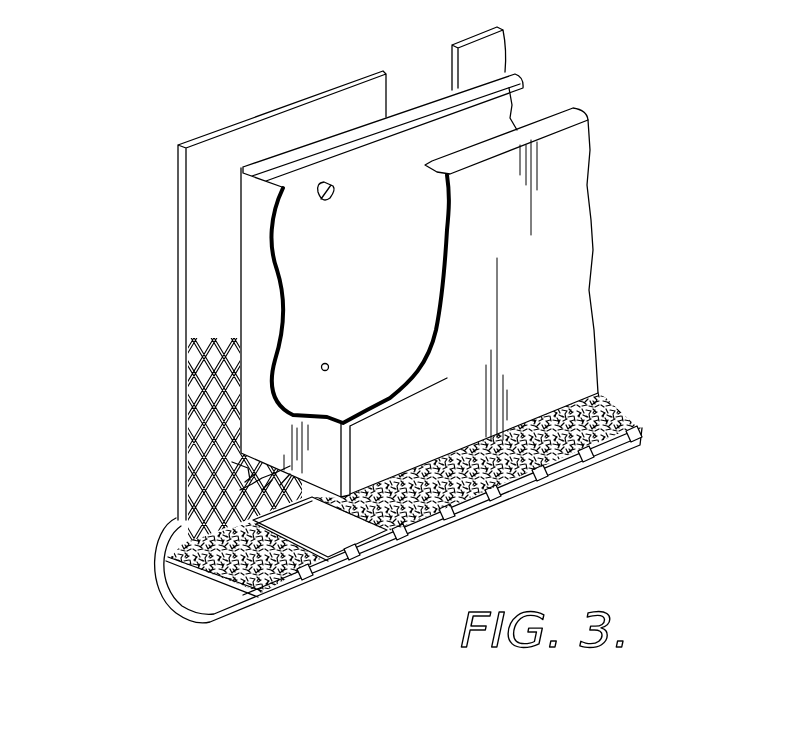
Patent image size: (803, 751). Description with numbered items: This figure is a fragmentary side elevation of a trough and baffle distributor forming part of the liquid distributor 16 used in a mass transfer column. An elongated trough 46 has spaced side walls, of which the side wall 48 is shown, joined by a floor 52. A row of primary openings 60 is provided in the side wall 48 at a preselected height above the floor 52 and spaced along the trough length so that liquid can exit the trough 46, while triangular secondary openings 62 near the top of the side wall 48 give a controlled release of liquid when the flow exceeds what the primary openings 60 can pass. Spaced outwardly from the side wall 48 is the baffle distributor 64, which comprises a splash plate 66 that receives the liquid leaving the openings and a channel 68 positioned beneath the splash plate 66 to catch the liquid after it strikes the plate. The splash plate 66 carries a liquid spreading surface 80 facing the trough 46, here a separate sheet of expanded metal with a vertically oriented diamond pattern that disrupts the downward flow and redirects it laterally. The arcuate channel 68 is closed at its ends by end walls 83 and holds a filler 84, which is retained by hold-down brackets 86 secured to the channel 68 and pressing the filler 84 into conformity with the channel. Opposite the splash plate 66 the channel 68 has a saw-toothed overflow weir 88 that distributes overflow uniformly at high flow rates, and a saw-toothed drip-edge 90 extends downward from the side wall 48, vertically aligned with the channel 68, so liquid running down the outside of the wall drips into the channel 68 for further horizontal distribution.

The liquid distributor 16 is at (290, 92).
The trough 46 is at (515, 301).
The side wall 48 is at (593, 288).
The floor 52 is at (345, 332).
The primary openings 60 is at (328, 363).
The secondary openings 62 is at (335, 192).
The baffle distributor 64 is at (244, 308).
The splash plate 66 is at (197, 210).
The channel 68 is at (368, 516).
The liquid spreading surface 80 is at (215, 340).
The end walls 83 is at (190, 593).
The filler 84 is at (190, 548).
The hold-down brackets 86 is at (347, 537).
The overflow weir 88 is at (440, 527).
The drip-edge 90 is at (250, 470).